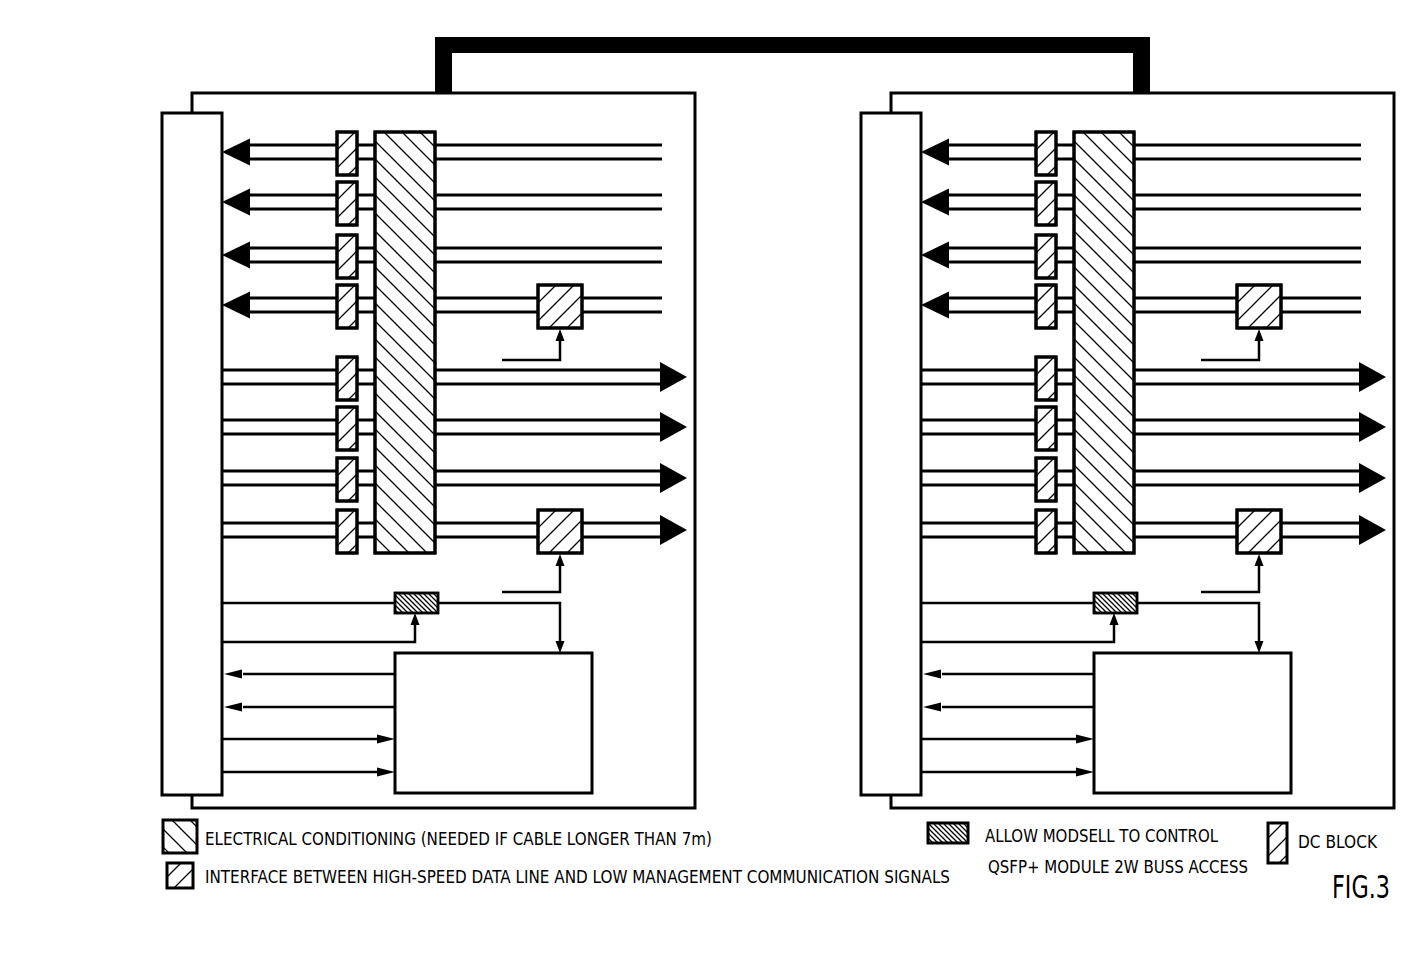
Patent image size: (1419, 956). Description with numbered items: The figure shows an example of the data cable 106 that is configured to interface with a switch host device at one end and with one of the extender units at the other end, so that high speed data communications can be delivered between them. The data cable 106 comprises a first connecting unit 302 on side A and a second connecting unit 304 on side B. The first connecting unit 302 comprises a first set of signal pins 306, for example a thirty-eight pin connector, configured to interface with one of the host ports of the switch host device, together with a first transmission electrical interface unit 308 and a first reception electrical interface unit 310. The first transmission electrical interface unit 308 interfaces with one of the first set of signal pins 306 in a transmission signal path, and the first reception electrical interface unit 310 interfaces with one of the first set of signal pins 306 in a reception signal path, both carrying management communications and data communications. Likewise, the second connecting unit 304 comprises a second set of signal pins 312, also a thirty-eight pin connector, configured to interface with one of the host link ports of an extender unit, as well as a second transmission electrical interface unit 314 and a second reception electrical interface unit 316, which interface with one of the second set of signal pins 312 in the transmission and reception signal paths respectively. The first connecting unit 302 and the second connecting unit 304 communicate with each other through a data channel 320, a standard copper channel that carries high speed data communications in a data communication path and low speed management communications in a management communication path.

The data cable 106 is at (777, 419).
The first connecting unit 302 is at (427, 429).
The second connecting unit 304 is at (1106, 429).
The first set of signal pins 306 is at (175, 113).
The first transmission electrical interface unit 308 is at (573, 555).
The first reception electrical interface unit 310 is at (573, 330).
The second set of signal pins 312 is at (869, 454).
The second transmission electrical interface unit 314 is at (1267, 551).
The second reception electrical interface unit 316 is at (1270, 322).
The data channel 320 is at (1152, 64).